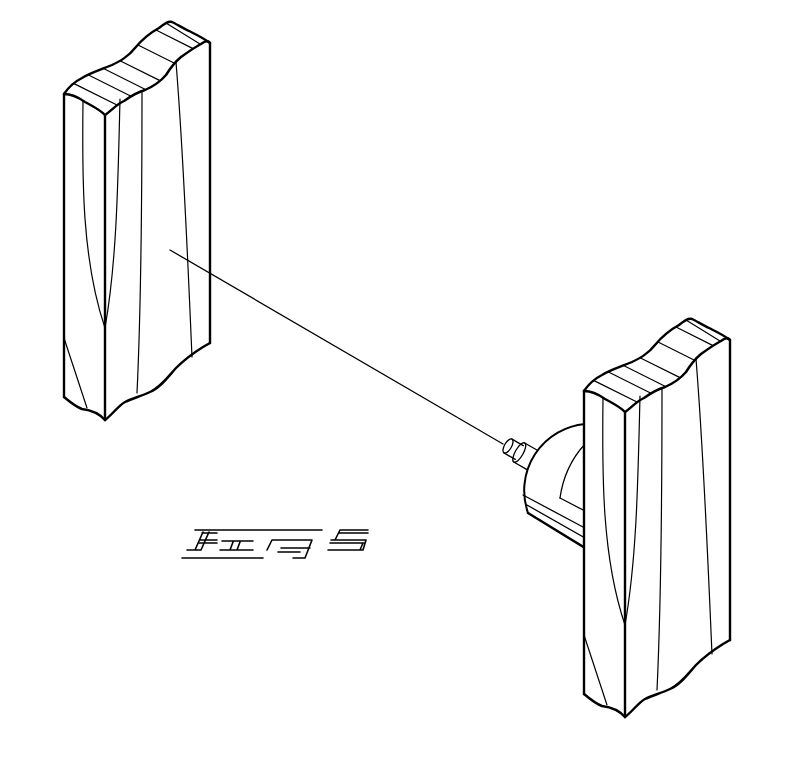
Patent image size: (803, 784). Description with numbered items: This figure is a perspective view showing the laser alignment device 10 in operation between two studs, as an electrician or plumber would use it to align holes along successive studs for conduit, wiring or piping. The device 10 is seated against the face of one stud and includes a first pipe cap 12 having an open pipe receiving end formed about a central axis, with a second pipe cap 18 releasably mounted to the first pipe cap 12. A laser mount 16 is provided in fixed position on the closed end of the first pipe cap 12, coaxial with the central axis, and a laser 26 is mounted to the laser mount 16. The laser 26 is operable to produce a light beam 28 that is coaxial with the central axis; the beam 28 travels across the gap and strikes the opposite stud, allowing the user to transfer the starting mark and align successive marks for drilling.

The laser alignment device 10 is at (514, 462).
The first pipe cap 12 is at (532, 523).
The laser mount 16 is at (529, 437).
The second pipe cap 18 is at (573, 547).
The laser 26 is at (503, 457).
The light beam 28 is at (315, 335).